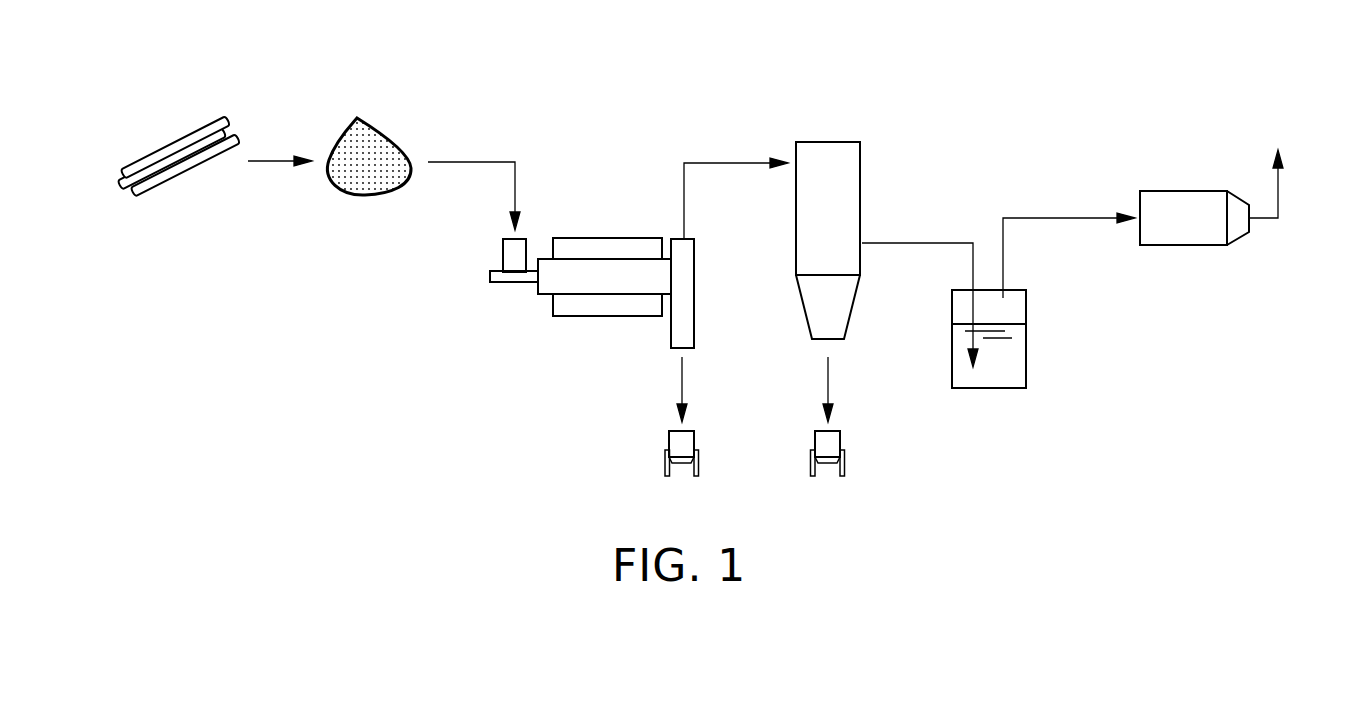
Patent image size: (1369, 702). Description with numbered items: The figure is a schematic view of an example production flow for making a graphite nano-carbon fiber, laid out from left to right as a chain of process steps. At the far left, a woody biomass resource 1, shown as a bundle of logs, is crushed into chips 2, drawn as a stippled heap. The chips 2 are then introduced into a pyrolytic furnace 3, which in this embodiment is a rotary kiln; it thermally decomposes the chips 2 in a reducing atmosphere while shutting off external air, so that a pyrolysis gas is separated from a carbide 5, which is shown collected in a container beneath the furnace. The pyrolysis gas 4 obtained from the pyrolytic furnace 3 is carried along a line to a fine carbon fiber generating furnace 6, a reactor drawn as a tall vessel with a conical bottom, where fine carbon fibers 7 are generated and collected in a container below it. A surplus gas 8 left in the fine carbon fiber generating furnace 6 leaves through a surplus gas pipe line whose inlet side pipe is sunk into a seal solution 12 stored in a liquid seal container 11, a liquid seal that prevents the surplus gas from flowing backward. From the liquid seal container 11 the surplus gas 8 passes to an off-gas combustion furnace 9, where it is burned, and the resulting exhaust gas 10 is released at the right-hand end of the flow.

The woody biomass resource 1 is at (195, 172).
The chips 2 is at (377, 197).
The pyrolytic furnace 3 is at (607, 237).
The pyrolysis gas 4 is at (722, 162).
The carbide 5 is at (695, 439).
The fine carbon fiber generating furnace 6 is at (834, 141).
The fine carbon fibers 7 is at (841, 438).
The surplus gas 8 is at (920, 242).
The off-gas combustion furnace 9 is at (1185, 191).
The exhaust gas 10 is at (1278, 188).
The liquid seal container 11 is at (1027, 303).
The seal solution 12 is at (1015, 362).